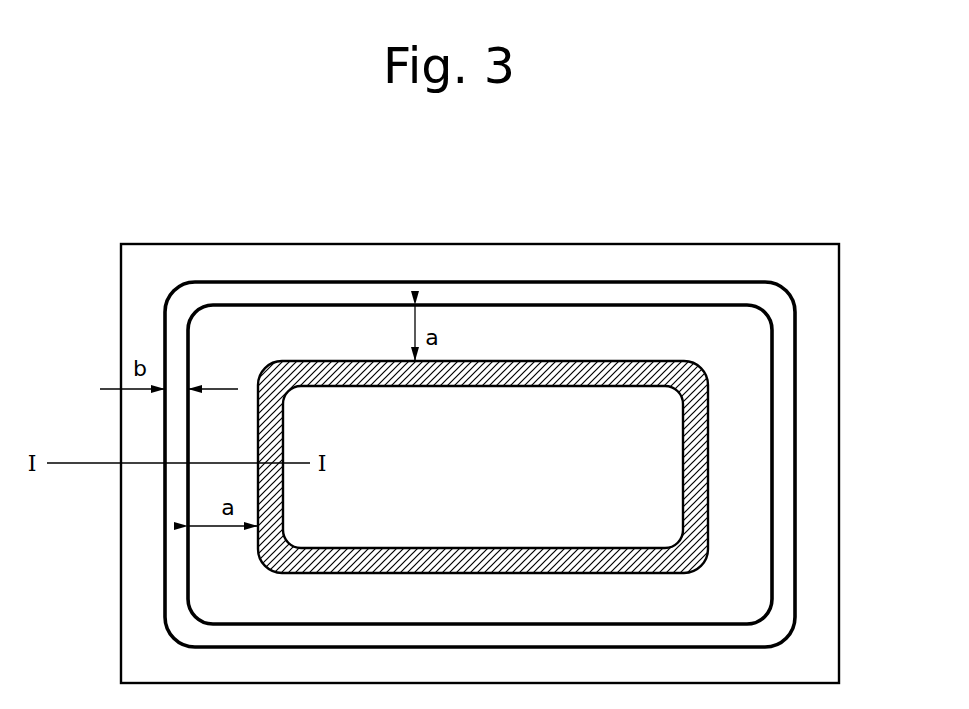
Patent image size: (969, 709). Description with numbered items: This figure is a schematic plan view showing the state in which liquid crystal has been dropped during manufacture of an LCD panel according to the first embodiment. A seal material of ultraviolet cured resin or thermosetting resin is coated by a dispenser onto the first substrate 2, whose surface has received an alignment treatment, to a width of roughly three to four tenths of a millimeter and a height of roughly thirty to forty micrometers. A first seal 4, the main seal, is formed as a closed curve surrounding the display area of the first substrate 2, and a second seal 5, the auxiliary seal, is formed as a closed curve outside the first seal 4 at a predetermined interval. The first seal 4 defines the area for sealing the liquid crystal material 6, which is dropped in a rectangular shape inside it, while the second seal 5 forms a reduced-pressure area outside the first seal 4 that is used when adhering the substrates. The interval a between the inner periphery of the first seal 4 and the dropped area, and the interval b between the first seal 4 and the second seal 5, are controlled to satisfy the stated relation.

The first substrate 2 is at (498, 252).
The first seal 4 is at (772, 462).
The second seal 5 is at (795, 382).
The liquid crystal material 6 is at (703, 537).